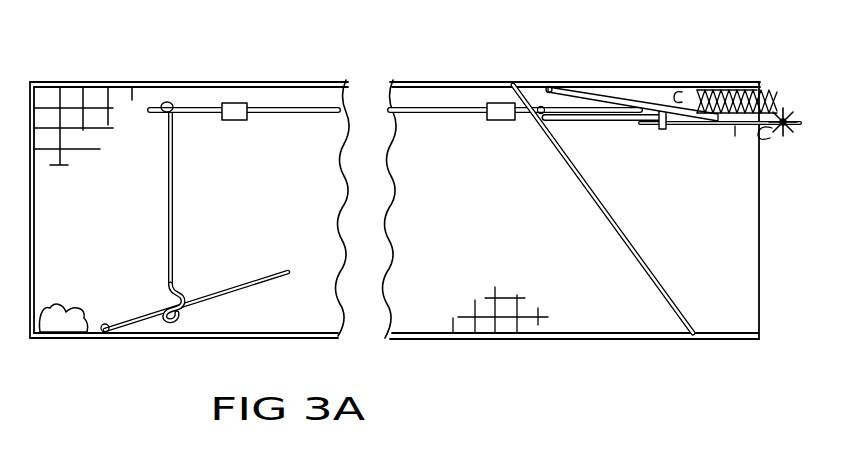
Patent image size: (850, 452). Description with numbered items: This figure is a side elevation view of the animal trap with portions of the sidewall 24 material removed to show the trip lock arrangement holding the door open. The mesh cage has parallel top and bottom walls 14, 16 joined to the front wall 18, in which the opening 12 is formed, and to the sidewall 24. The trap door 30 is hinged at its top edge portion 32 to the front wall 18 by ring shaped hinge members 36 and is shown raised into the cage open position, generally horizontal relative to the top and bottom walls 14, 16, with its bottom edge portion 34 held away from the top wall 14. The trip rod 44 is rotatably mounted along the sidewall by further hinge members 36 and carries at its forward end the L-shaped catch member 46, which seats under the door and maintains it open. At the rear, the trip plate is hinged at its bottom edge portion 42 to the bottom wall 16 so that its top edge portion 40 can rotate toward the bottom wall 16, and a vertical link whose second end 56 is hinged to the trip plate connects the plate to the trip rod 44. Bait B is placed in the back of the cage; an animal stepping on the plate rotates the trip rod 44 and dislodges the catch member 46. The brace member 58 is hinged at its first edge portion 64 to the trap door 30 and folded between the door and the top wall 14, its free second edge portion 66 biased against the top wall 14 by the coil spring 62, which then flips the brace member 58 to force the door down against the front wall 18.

The opening 12 is at (672, 290).
The top wall 14 is at (327, 82).
The bottom wall 16 is at (268, 335).
The front wall 18 is at (693, 327).
The sidewall 24 is at (98, 98).
The trap door 30 is at (606, 118).
The top edge portion 32 is at (556, 133).
The bottom edge portion 34 is at (735, 132).
The hinge members 36 is at (235, 104).
The top edge portion 40 is at (280, 282).
The bottom edge portion 42 is at (138, 325).
The trip rod 44 is at (273, 107).
The catch member 46 is at (662, 127).
The second end 56 is at (193, 317).
The brace member 58 is at (643, 97).
The coil spring 62 is at (760, 92).
The first edge portion 64 is at (704, 95).
The second edge portion 66 is at (590, 92).
The bait B is at (60, 325).